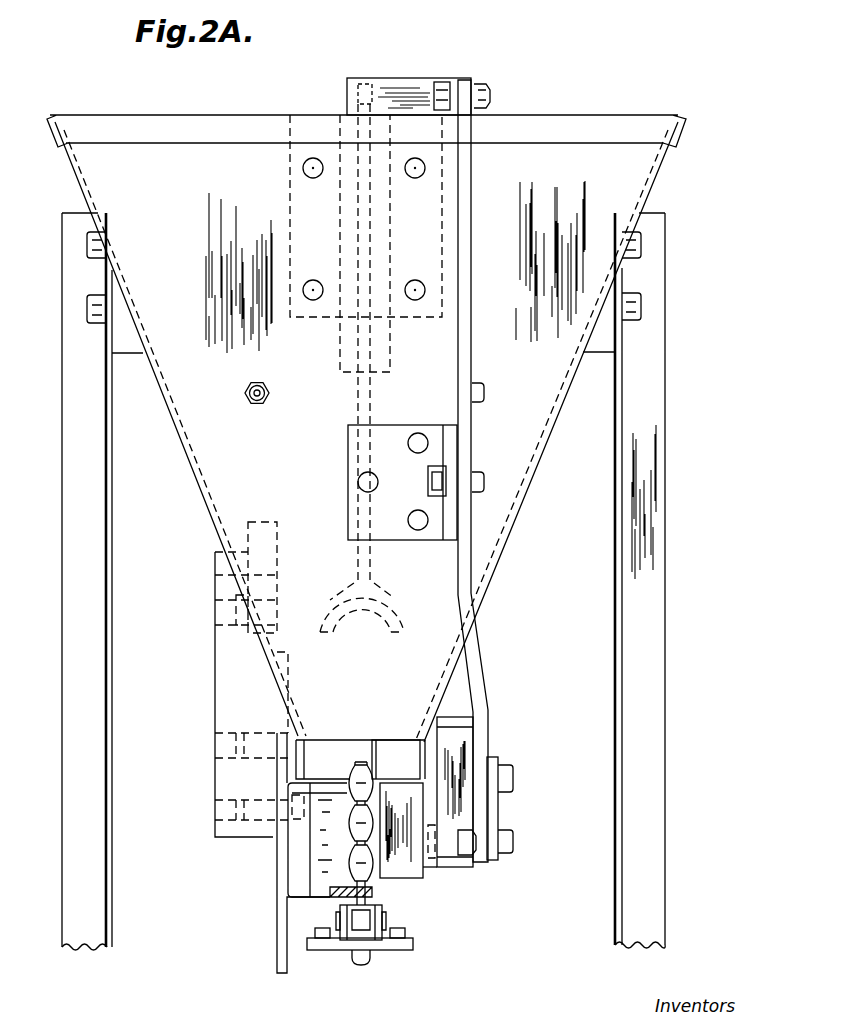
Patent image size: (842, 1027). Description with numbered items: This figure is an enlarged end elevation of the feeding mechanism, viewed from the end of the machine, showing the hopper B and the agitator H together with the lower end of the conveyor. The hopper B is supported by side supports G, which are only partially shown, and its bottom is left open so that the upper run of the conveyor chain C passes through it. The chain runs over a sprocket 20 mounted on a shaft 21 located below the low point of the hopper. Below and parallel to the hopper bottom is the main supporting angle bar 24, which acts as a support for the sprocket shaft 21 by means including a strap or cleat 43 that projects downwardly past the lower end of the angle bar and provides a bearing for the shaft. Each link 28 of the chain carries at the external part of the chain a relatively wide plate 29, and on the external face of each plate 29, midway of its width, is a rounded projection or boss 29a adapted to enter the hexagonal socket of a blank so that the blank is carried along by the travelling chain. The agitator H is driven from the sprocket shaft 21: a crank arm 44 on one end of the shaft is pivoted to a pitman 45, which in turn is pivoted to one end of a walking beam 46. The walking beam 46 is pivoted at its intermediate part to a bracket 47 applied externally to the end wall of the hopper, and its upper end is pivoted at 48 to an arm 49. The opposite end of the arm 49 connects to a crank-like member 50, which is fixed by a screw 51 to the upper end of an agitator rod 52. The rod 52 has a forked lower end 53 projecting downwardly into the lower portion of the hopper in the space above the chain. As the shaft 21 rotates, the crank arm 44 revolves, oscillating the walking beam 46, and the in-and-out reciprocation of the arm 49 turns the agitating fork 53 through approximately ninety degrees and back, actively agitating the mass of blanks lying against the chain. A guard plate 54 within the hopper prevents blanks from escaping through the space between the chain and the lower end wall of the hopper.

The hopper B is at (588, 150).
The side supports G is at (62, 523).
The sprocket 20 is at (358, 760).
The shaft 21 is at (428, 870).
The main supporting angle bar 24 is at (282, 936).
The link 28 is at (386, 930).
The plate 29 is at (407, 950).
The rounded projection or boss 29a is at (363, 963).
The strap or cleat 43 is at (407, 802).
The crank arm 44 is at (460, 748).
The pitman 45 is at (490, 782).
The walking beam 46 is at (478, 660).
The bracket 47 is at (450, 453).
The pivot 48 is at (480, 99).
The arm 49 is at (450, 92).
The crank-like member 50 is at (408, 90).
The screw 51 is at (375, 75).
The agitator rod 52 is at (358, 402).
The forked lower end 53 is at (335, 612).
The guard plate 54 is at (396, 758).
The conveyor chain C is at (386, 922).
The agitator H is at (372, 590).